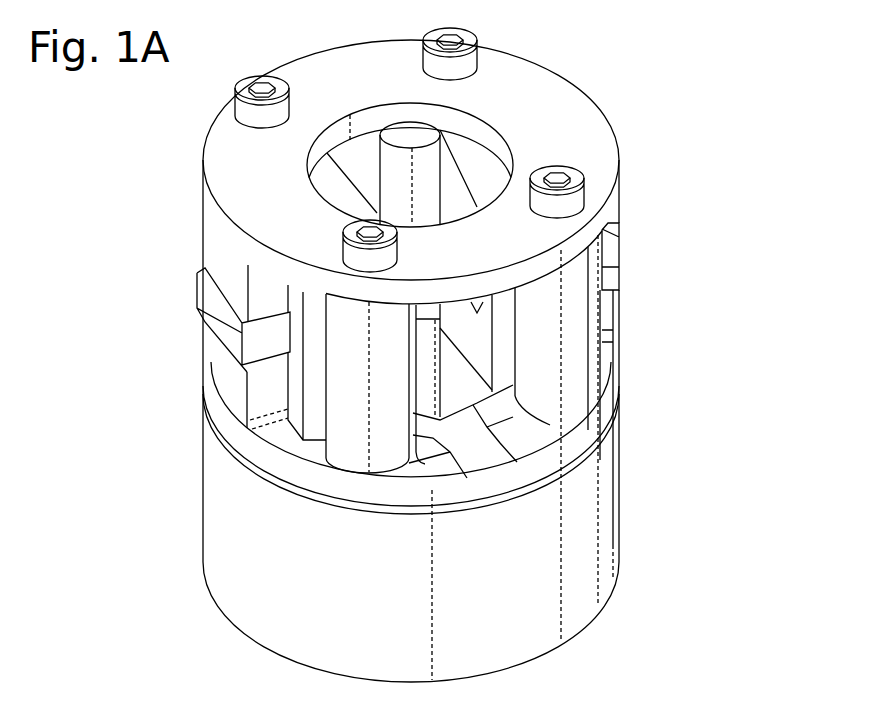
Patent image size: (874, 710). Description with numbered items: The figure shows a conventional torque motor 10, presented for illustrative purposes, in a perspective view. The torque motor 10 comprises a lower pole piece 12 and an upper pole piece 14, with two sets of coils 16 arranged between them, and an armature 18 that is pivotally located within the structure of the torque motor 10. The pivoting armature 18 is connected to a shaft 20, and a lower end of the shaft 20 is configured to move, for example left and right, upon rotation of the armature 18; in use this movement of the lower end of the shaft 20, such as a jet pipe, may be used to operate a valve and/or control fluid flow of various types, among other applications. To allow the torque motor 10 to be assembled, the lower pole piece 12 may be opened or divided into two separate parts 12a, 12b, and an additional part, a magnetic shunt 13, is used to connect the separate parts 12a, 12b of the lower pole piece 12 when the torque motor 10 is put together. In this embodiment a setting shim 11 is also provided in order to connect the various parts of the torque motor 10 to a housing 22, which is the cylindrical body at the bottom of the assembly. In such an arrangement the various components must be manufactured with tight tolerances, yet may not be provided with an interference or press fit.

The torque motor 10 is at (705, 88).
The setting shim 11 is at (553, 478).
The lower pole piece 12 is at (558, 462).
The separate part of lower pole piece 12a is at (376, 491).
The separate part of lower pole piece 12b is at (527, 472).
The magnetic shunt 13 is at (480, 440).
The upper pole piece 14 is at (600, 137).
The coils 16 is at (293, 381).
The armature 18 is at (222, 318).
The shaft 20 is at (430, 370).
The housing 22 is at (265, 555).